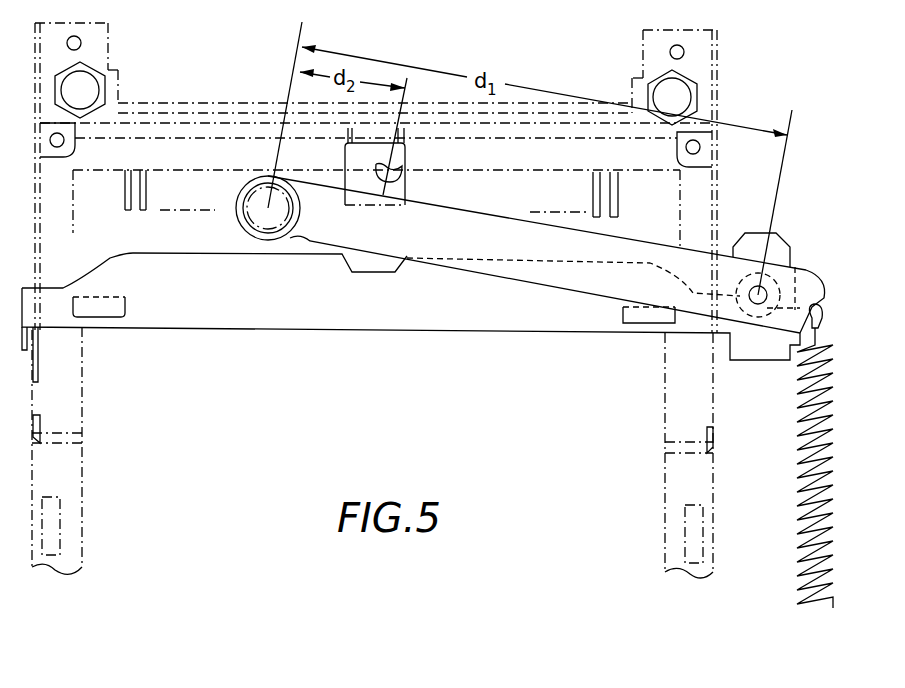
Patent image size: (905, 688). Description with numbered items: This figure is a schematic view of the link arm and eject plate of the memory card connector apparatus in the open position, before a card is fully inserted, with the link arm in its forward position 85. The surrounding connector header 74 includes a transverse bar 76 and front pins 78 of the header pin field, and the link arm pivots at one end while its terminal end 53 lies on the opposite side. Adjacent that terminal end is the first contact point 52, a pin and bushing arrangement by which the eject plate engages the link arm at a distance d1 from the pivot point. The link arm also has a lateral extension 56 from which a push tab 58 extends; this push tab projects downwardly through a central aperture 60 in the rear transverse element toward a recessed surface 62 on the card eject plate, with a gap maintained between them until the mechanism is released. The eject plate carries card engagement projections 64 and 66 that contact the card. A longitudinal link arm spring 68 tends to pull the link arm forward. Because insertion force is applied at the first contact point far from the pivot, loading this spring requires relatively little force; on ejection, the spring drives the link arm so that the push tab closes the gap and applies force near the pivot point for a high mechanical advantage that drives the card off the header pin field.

The connector header 74 is at (160, 96).
The transverse bar 76 is at (243, 102).
The front pins 78 is at (128, 208).
The lateral extension 56 is at (390, 185).
The central aperture 60 is at (343, 167).
The push tab 58 is at (390, 170).
The terminal end of the link arm 53 is at (807, 245).
The first contact point 52 is at (740, 292).
The forward position of the link arm 85 is at (834, 308).
The recessed surface 62 is at (387, 272).
The card engagement projection 64 is at (118, 310).
The card engagement projection 66 is at (648, 315).
The longitudinal link arm spring 68 is at (798, 434).